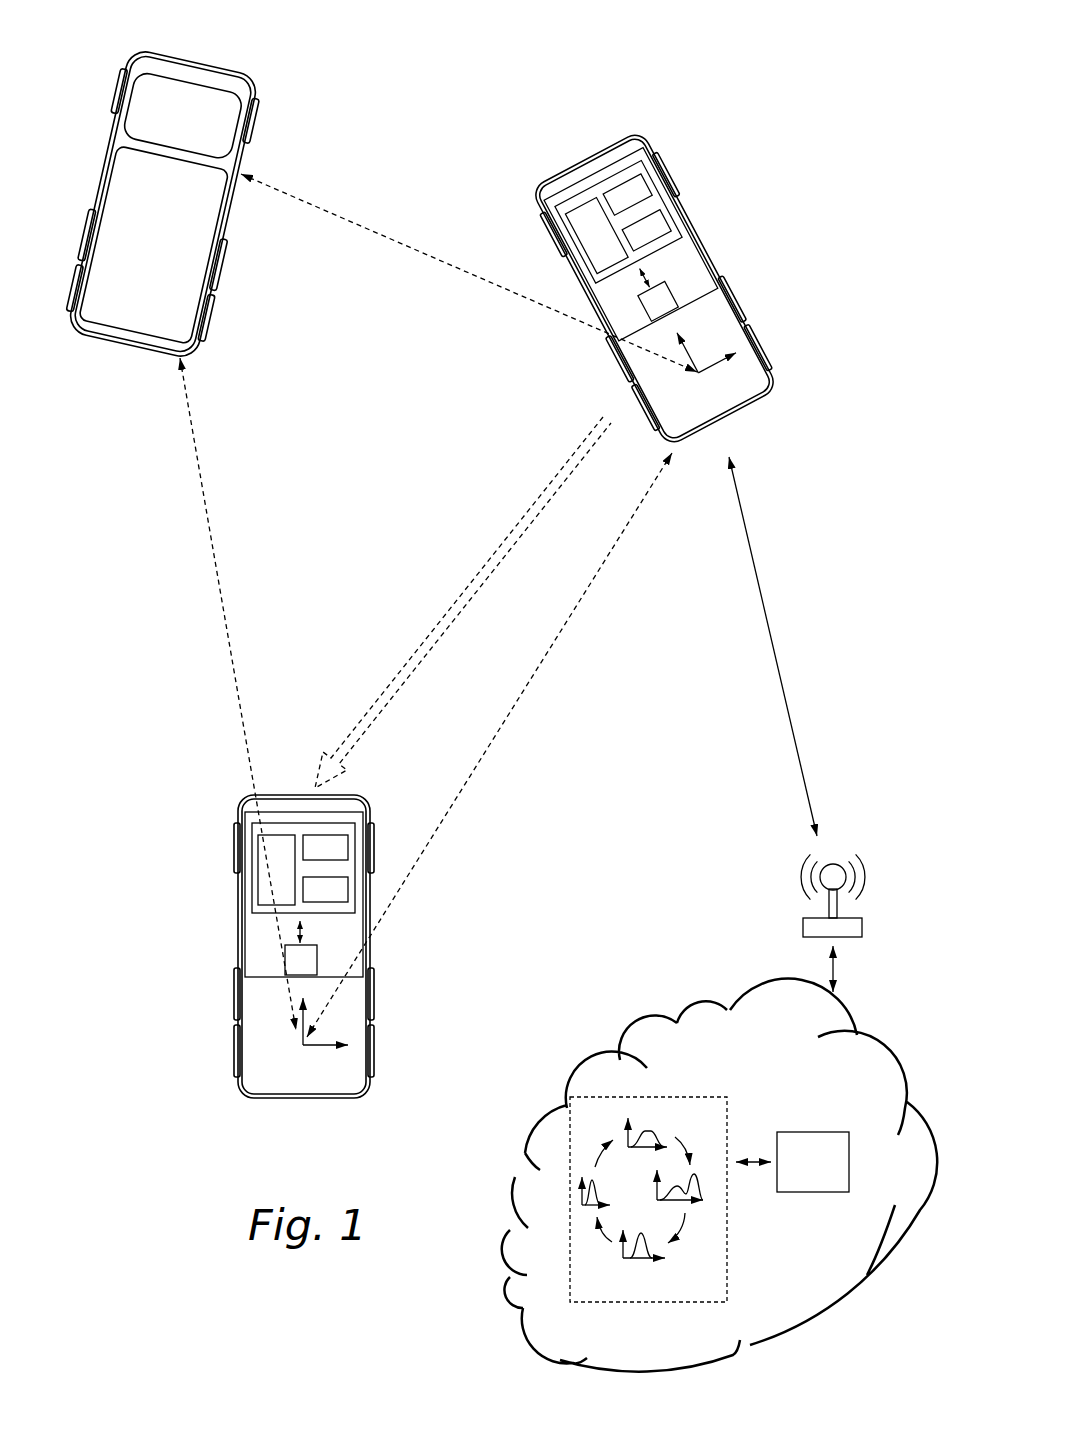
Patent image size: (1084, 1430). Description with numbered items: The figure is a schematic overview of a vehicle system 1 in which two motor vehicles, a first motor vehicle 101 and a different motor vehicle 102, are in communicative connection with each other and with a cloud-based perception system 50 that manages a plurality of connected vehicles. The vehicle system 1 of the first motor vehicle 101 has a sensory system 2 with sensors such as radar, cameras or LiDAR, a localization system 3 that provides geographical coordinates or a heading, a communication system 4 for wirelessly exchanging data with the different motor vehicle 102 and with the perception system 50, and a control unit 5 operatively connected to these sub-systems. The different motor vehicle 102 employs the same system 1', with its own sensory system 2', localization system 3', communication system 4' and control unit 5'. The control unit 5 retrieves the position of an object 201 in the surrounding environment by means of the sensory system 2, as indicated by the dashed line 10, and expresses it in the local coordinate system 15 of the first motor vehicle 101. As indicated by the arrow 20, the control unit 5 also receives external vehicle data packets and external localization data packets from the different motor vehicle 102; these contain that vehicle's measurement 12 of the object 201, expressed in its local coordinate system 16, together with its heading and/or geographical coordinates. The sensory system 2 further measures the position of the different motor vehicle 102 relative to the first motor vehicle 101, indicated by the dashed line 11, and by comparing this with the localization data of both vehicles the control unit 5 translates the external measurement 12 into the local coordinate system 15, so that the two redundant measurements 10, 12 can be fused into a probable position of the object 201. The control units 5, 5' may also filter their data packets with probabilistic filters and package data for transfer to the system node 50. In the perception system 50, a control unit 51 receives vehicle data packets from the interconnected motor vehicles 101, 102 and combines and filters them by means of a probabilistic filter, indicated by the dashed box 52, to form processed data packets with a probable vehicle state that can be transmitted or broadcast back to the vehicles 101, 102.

The vehicle system 1 is at (297, 923).
The vehicle system of the different motor vehicle 1' is at (683, 273).
The sensory system 2 is at (265, 868).
The sensory system of the different motor vehicle 2' is at (618, 222).
The localization system 3 is at (352, 814).
The localization system of the different motor vehicle 3' is at (627, 194).
The communication system 4 is at (361, 866).
The communication system of the different motor vehicle 4' is at (646, 230).
The control unit 5 is at (352, 961).
The control unit of the different motor vehicle 5' is at (659, 302).
The measurement of the object position by the first vehicle 10 is at (226, 598).
The relative position measurement between devices 11 is at (569, 613).
The measurement of the object by the different motor vehicle 12 is at (460, 268).
The local coordinate system of the first vehicle 15 is at (327, 1078).
The local coordinate system of the different motor vehicle 16 is at (706, 343).
The arrow indicating reception of external data packets 20 is at (483, 568).
The perception system 50 is at (647, 1068).
The control unit of the perception system 51 is at (797, 1193).
The probabilistic filter 52 is at (650, 1303).
The first motor vehicle 101 is at (295, 979).
The different motor vehicle 102 is at (654, 288).
The object 201 is at (222, 77).